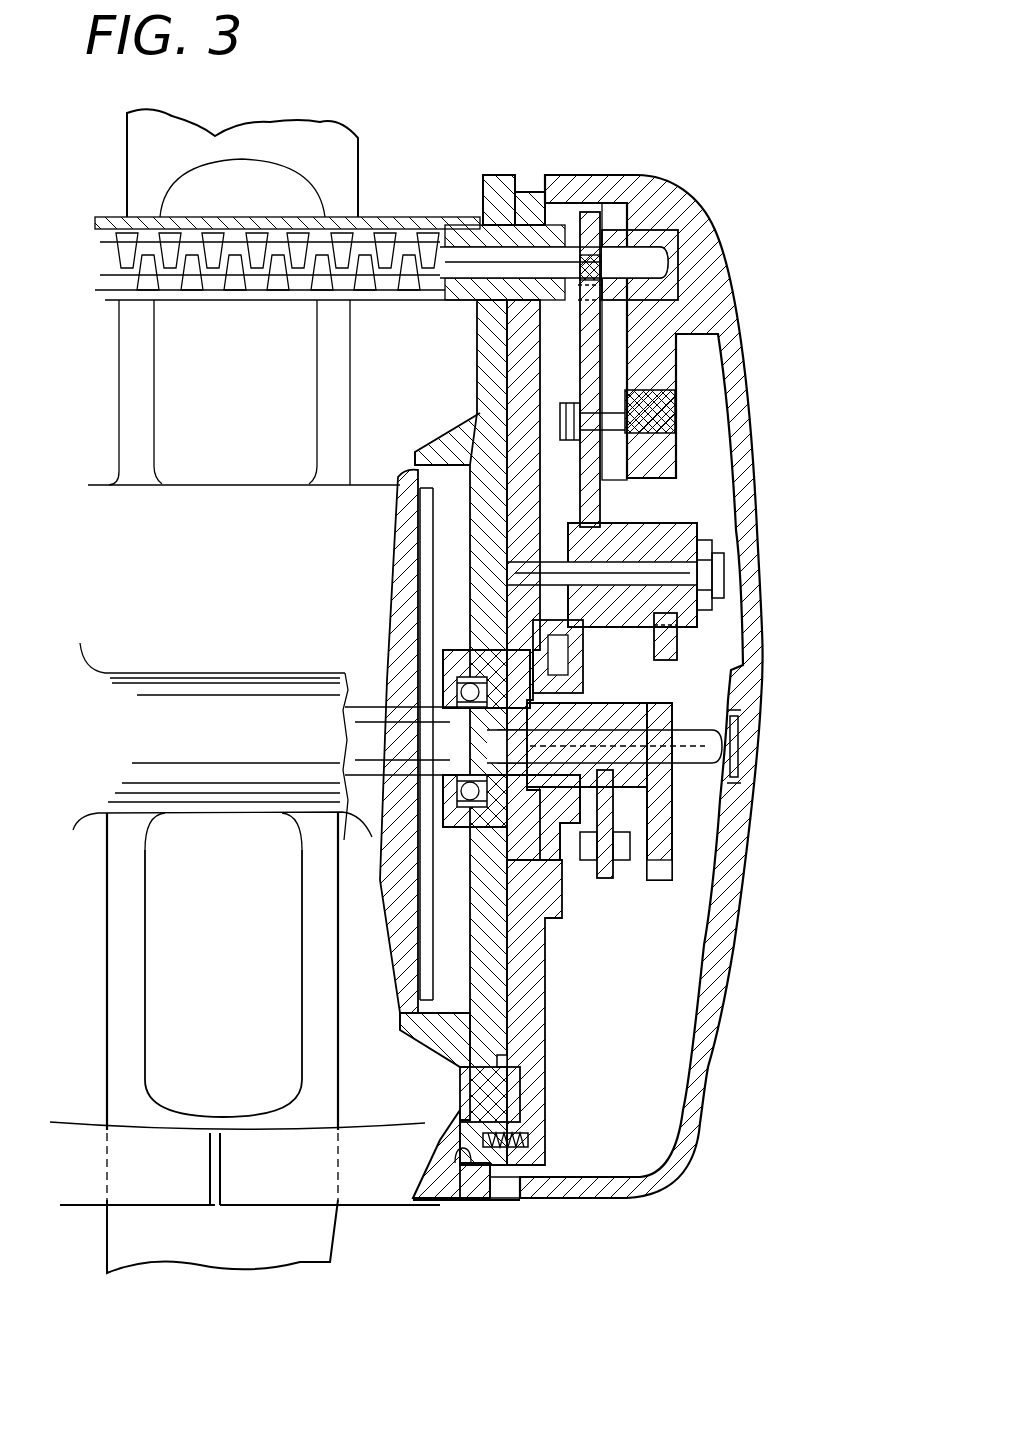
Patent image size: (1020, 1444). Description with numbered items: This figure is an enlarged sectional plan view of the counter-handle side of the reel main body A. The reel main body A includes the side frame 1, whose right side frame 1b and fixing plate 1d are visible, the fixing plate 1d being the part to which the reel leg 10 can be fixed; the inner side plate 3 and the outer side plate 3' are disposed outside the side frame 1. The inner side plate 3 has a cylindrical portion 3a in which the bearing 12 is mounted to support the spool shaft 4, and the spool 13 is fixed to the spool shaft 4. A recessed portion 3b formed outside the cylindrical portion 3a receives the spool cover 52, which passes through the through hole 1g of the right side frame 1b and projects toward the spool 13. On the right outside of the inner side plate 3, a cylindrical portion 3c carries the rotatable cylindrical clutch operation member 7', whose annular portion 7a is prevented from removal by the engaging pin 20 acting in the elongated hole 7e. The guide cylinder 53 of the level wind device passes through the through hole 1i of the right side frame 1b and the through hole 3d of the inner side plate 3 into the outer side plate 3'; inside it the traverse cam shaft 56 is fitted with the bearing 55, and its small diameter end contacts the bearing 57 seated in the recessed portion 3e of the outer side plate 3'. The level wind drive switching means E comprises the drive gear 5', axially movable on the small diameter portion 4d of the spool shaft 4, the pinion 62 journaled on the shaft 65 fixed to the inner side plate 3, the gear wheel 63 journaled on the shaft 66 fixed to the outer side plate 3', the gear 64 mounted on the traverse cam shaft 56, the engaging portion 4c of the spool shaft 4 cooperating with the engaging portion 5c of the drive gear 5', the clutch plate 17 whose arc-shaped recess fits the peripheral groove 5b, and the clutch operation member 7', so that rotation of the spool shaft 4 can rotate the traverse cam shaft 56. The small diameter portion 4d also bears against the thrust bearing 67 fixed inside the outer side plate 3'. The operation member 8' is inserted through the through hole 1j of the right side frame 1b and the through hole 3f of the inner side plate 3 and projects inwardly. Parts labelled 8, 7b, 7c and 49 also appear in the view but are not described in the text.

The side frame 1 is at (503, 173).
The through hole 1i is at (470, 225).
The fixing plate 1d is at (100, 485).
The through hole 1g is at (463, 418).
The through hole 1j is at (462, 1172).
The right side frame 1b is at (478, 1205).
The inner side plate 3 is at (471, 631).
The outer side plate 3' is at (660, 686).
The cylindrical portion 3a is at (443, 660).
The recessed portion 3b is at (500, 1062).
The cylindrical portion 3c is at (575, 870).
The through hole 3d is at (572, 182).
The recessed portion 3e is at (670, 196).
The through hole 3f is at (503, 1192).
The spool shaft 4 is at (693, 766).
The engaging portion 4c is at (440, 745).
The small diameter portion 4d is at (738, 712).
The drive gear 5' is at (724, 791).
The peripheral groove 5b is at (682, 695).
The engaging portion 5c is at (498, 745).
The cylindrical clutch operation member 7' is at (566, 732).
The annular portion 7a is at (560, 885).
The support portion 7b is at (545, 1105).
The support portion 7c is at (612, 870).
The elongated hole 7e is at (677, 640).
The housing section 8 is at (120, 1250).
The operation member 8' is at (330, 1256).
The reel leg 10 is at (238, 1108).
The bearing 12 is at (437, 718).
The spool 13 is at (215, 792).
The clutch plate 17 is at (622, 862).
The engaging pin 20 is at (583, 665).
The screw 49 is at (535, 1142).
The spool cover 52 is at (412, 1040).
The guide cylinder 53 is at (408, 222).
The bearing 55 is at (462, 235).
The traverse cam shaft 56 is at (620, 205).
The bearing 57 is at (690, 216).
The pinion 62 is at (697, 527).
The gear wheel 63 is at (600, 495).
The gear 64 is at (597, 212).
The shaft 65 is at (712, 575).
The shaft 66 is at (640, 392).
The thrust bearing 67 is at (741, 775).
The reel main body A is at (524, 143).
The level wind drive switching means E is at (712, 612).